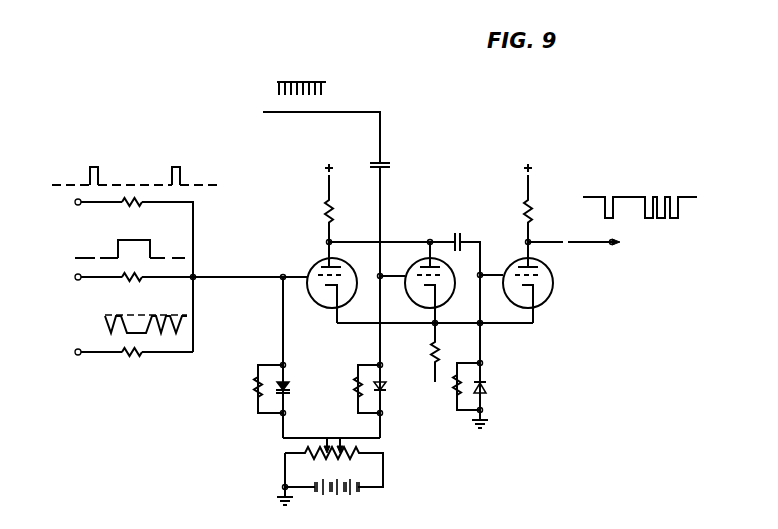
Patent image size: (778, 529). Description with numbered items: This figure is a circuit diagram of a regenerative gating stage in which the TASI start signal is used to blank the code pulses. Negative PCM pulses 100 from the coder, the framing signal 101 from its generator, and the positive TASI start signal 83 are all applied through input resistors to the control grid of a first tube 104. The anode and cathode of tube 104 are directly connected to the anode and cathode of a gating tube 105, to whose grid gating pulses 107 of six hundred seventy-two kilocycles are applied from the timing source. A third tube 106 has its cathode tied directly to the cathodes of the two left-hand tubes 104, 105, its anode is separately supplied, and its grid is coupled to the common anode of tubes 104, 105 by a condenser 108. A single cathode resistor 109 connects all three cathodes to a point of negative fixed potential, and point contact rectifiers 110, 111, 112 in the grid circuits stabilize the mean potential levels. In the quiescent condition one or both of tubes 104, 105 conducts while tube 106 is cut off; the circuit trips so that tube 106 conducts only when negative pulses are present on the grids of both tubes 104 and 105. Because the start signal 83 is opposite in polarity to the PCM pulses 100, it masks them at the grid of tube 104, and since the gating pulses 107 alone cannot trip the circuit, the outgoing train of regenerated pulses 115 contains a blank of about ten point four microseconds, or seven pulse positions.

The framing signal 101 is at (98, 173).
The TASI start signal 83 is at (118, 250).
The PCM pulses 100 is at (106, 331).
The gating pulses 107 is at (278, 89).
The tube 104 is at (315, 302).
The gating tube 105 is at (409, 299).
The third tube 106 is at (553, 291).
The condenser 108 is at (460, 230).
The cathode resistor 109 is at (438, 347).
The point contact rectifier 110 is at (291, 387).
The point contact rectifier 111 is at (392, 389).
The point contact rectifier 112 is at (492, 390).
The outgoing train of regenerated pulses 115 is at (679, 213).